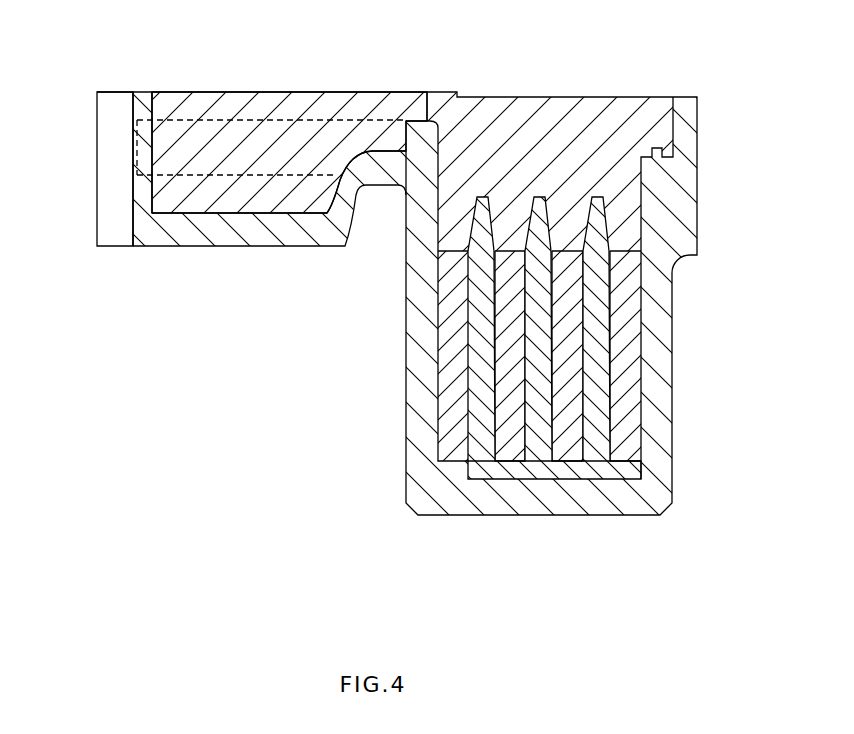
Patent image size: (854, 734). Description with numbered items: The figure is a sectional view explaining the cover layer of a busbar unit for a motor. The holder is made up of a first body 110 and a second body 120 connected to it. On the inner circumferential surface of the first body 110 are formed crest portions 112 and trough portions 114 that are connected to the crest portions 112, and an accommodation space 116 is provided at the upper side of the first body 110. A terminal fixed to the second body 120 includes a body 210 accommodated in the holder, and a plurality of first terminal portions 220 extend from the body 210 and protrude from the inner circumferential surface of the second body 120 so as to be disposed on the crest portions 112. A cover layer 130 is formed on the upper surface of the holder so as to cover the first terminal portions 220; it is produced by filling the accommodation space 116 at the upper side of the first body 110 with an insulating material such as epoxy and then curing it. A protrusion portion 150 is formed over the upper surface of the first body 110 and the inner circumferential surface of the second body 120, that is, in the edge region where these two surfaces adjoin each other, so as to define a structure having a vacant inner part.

The first body 110 is at (200, 237).
The crest portions 112 is at (97, 166).
The trough portions 114 is at (138, 112).
The accommodation space 116 is at (272, 192).
The second body 120 is at (417, 131).
The cover layer 130 is at (201, 104).
The protrusion portion 150 is at (357, 170).
The body 210 is at (535, 389).
The first terminal portions 220 is at (286, 114).